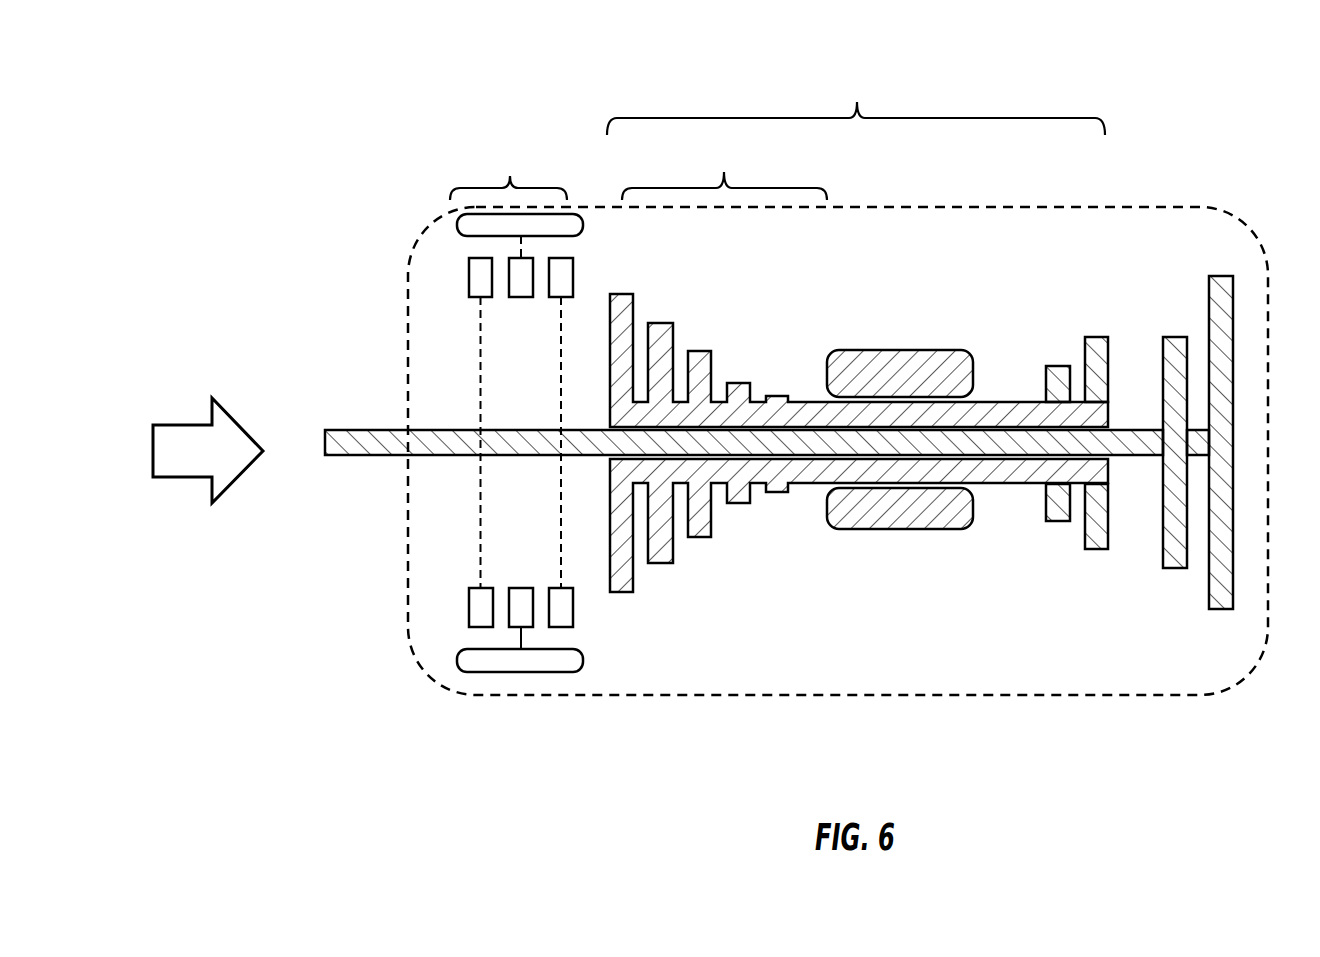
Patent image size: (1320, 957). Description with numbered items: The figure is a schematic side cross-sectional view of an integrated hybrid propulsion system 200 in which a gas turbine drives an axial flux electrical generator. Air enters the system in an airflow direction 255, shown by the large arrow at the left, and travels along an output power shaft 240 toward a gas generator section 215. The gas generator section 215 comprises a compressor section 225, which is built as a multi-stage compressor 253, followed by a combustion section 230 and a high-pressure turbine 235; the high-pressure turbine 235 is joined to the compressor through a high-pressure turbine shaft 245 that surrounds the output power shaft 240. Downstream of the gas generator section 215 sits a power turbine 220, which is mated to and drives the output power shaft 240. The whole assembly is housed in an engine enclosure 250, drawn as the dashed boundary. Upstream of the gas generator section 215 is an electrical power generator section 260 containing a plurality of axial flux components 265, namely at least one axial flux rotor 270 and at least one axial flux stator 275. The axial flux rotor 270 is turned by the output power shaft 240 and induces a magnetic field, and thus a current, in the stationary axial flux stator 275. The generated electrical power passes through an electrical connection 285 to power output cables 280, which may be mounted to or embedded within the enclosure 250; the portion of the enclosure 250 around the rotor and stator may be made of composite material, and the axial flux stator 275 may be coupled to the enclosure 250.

The integrated hybrid propulsion system 200 is at (289, 188).
The gas generator section 215 is at (897, 318).
The power turbine 220 is at (1216, 250).
The compressor section 225 is at (724, 170).
The combustion section 230 is at (942, 557).
The high-pressure turbine 235 is at (1078, 303).
The output power shaft 240 is at (367, 455).
The high-pressure turbine shaft 245 is at (803, 484).
The engine enclosure 250 is at (1173, 695).
The multi-stage compressor 253 is at (713, 592).
The airflow direction 255 is at (189, 426).
The electrical power generator section 260 is at (516, 364).
The axial flux components 265 is at (421, 366).
The axial flux rotor 270 is at (478, 607).
The axial flux stator 275 is at (513, 275).
The power output cables 280 is at (479, 672).
The electrical connection 285 is at (520, 638).